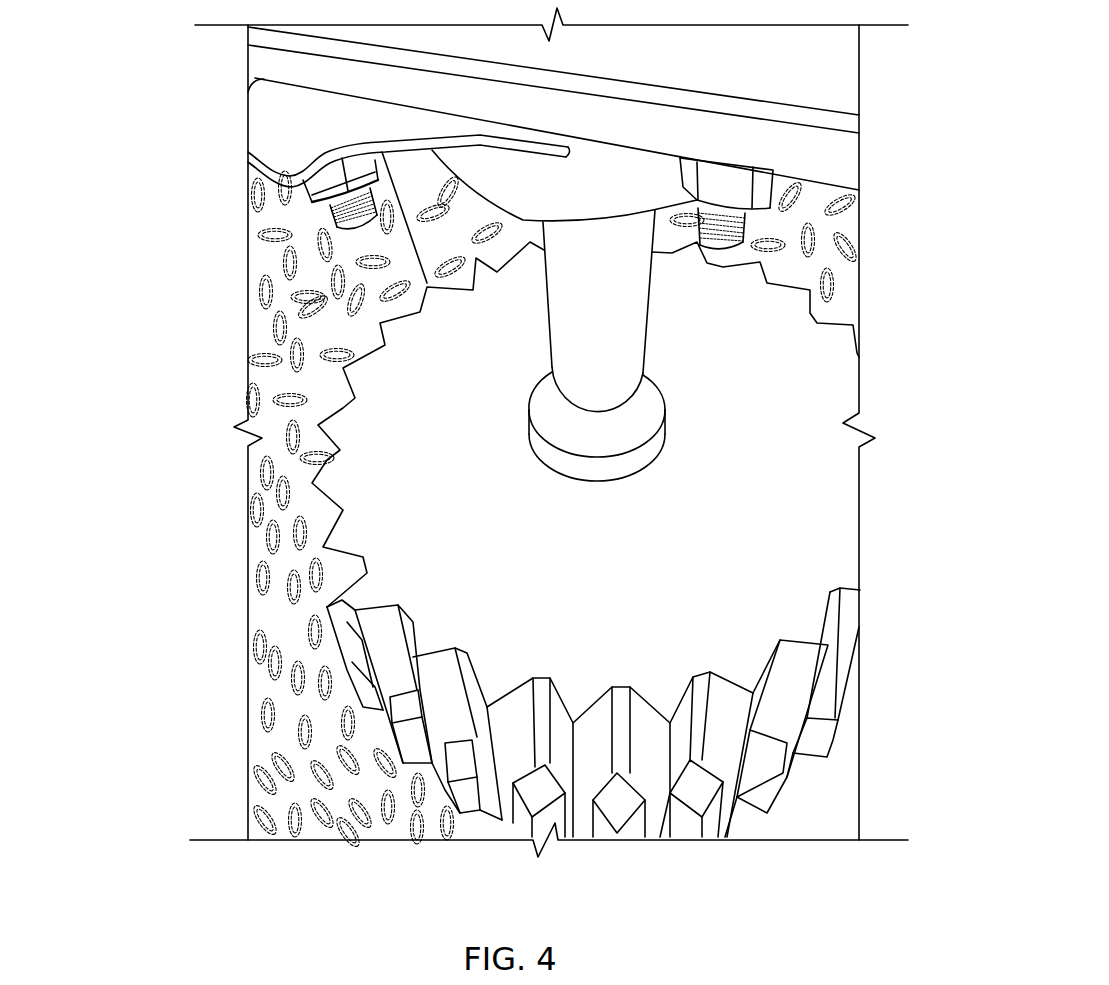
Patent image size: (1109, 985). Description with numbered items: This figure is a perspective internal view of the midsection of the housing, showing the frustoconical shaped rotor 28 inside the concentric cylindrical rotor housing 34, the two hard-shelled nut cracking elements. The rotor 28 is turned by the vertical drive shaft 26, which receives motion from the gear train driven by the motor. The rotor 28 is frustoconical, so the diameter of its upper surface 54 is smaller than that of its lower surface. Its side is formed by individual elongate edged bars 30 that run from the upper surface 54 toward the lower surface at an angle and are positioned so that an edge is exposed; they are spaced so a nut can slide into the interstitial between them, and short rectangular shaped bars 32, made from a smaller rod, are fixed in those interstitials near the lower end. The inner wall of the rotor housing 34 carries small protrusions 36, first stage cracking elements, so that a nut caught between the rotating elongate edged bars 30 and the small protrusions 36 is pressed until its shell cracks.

The vertical drive shaft 26 is at (623, 333).
The frustoconical shaped rotor 28 is at (638, 482).
The elongate edged bars 30 is at (343, 572).
The short rectangular shaped bars 32 is at (820, 738).
The concentric cylindrical rotor housing 34 is at (245, 430).
The small protrusions 36 is at (263, 300).
The upper surface 54 is at (755, 447).